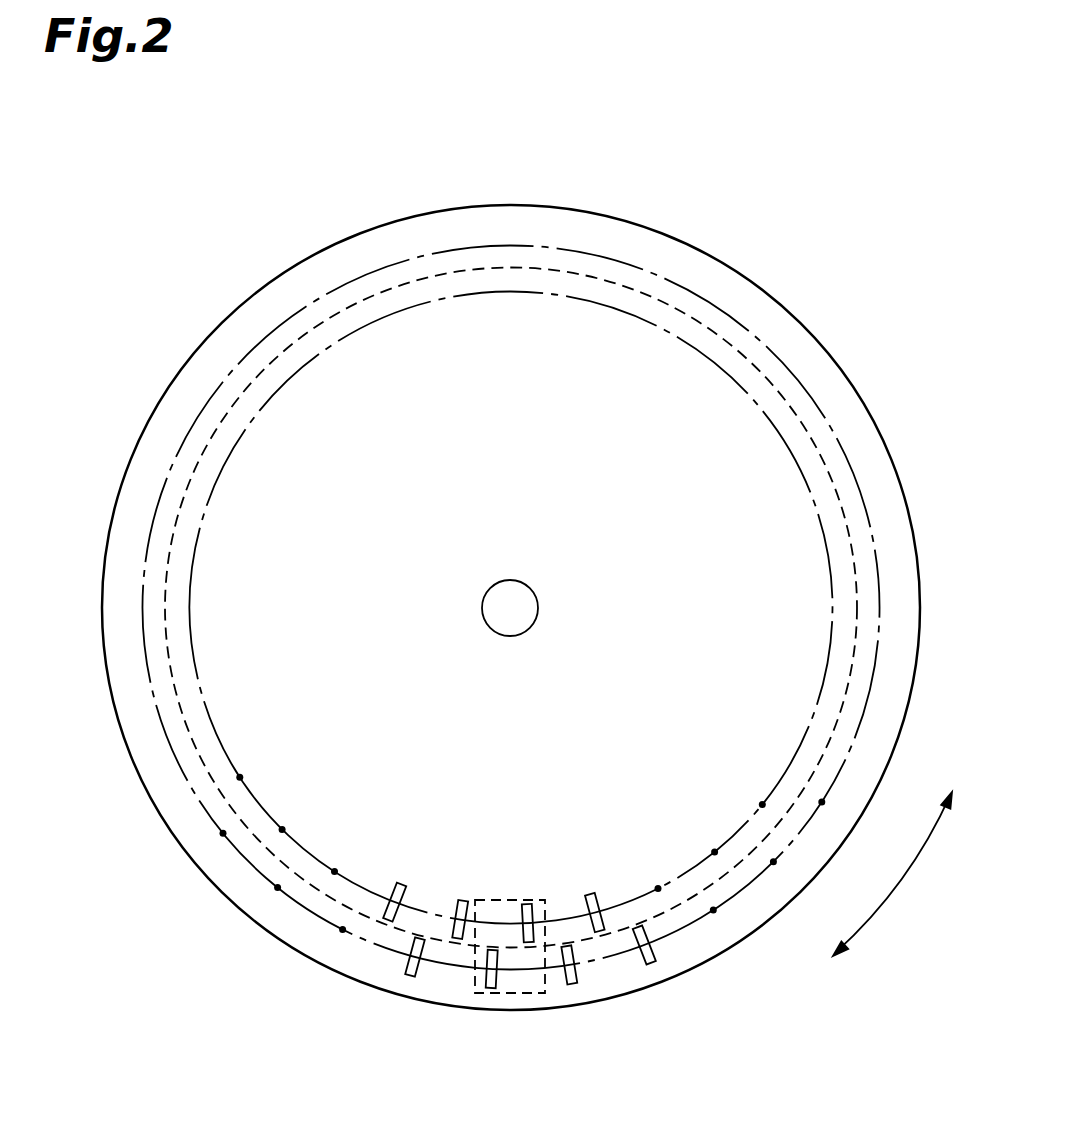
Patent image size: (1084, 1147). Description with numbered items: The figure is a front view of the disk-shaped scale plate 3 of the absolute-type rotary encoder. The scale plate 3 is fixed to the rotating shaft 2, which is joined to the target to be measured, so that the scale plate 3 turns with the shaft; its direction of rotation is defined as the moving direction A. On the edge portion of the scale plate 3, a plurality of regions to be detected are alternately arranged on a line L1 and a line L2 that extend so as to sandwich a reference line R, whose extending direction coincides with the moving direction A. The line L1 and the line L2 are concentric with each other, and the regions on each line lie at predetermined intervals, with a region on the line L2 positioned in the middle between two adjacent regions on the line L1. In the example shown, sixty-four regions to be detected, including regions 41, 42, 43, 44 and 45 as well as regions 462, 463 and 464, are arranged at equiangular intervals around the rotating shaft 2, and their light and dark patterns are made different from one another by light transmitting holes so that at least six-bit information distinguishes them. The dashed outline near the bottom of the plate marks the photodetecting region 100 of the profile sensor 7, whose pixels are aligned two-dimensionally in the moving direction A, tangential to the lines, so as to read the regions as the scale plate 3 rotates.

The scale plate 3 is at (231, 318).
The reference line R is at (636, 296).
The rotating shaft 2 is at (530, 594).
The line L1 is at (303, 853).
The line L2 is at (200, 797).
The region to be detected 462 is at (392, 895).
The region to be detected 464 is at (457, 908).
The region to be detected 42 is at (538, 912).
The region to be detected 44 is at (598, 910).
The region to be detected 45 is at (653, 963).
The region to be detected 43 is at (573, 984).
The region to be detected 41 is at (493, 988).
The region to be detected 463 is at (405, 976).
The photodetecting region 100 is at (571, 1002).
The profile sensor 7 is at (548, 994).
The moving direction A is at (898, 883).